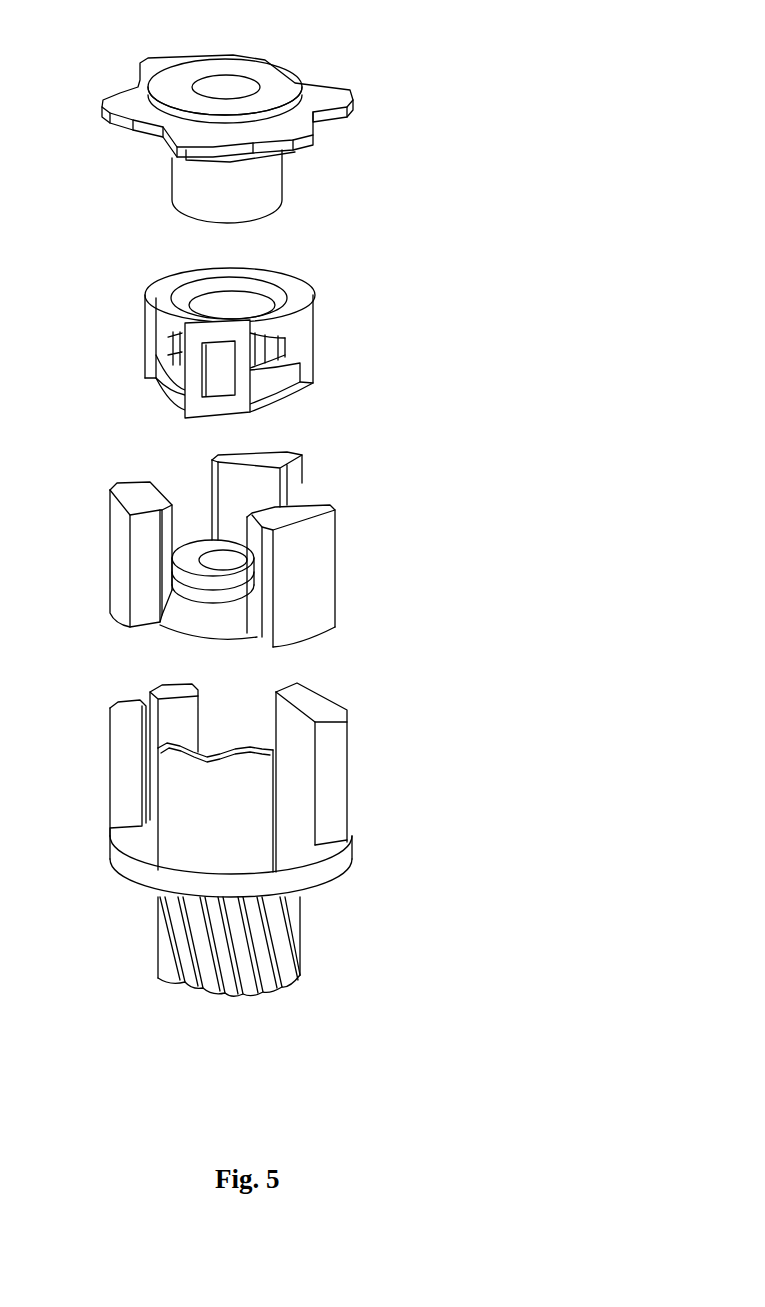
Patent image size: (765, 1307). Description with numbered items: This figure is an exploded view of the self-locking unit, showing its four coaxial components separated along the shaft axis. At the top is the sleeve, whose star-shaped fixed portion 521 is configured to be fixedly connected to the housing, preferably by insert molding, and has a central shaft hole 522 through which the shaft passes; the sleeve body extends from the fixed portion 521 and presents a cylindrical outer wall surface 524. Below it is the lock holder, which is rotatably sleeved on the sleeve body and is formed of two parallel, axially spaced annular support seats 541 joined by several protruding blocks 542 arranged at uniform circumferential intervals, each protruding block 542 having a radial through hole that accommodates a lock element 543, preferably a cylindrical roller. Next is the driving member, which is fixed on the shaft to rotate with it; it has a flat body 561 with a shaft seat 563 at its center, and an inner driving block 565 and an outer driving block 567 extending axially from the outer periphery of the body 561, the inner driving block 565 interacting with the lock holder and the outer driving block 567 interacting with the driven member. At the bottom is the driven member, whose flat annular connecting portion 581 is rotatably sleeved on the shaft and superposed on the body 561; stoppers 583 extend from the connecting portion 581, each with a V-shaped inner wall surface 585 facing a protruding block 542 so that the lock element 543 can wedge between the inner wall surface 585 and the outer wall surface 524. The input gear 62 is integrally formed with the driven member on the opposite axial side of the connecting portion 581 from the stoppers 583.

The fixed portion 521 is at (128, 128).
The shaft hole 522 is at (218, 82).
The outer wall surface 524 is at (266, 193).
The support seat 541 is at (292, 383).
The protruding block 542 is at (310, 320).
The lock element 543 is at (223, 377).
The body 561 is at (183, 627).
The shaft seat 563 is at (203, 572).
The inner driving block 565 is at (150, 482).
The outer driving block 567 is at (118, 532).
The connecting portion 581 is at (300, 847).
The stopper 583 is at (327, 797).
The inner wall surface 585 is at (303, 720).
The input gear 62 is at (175, 932).